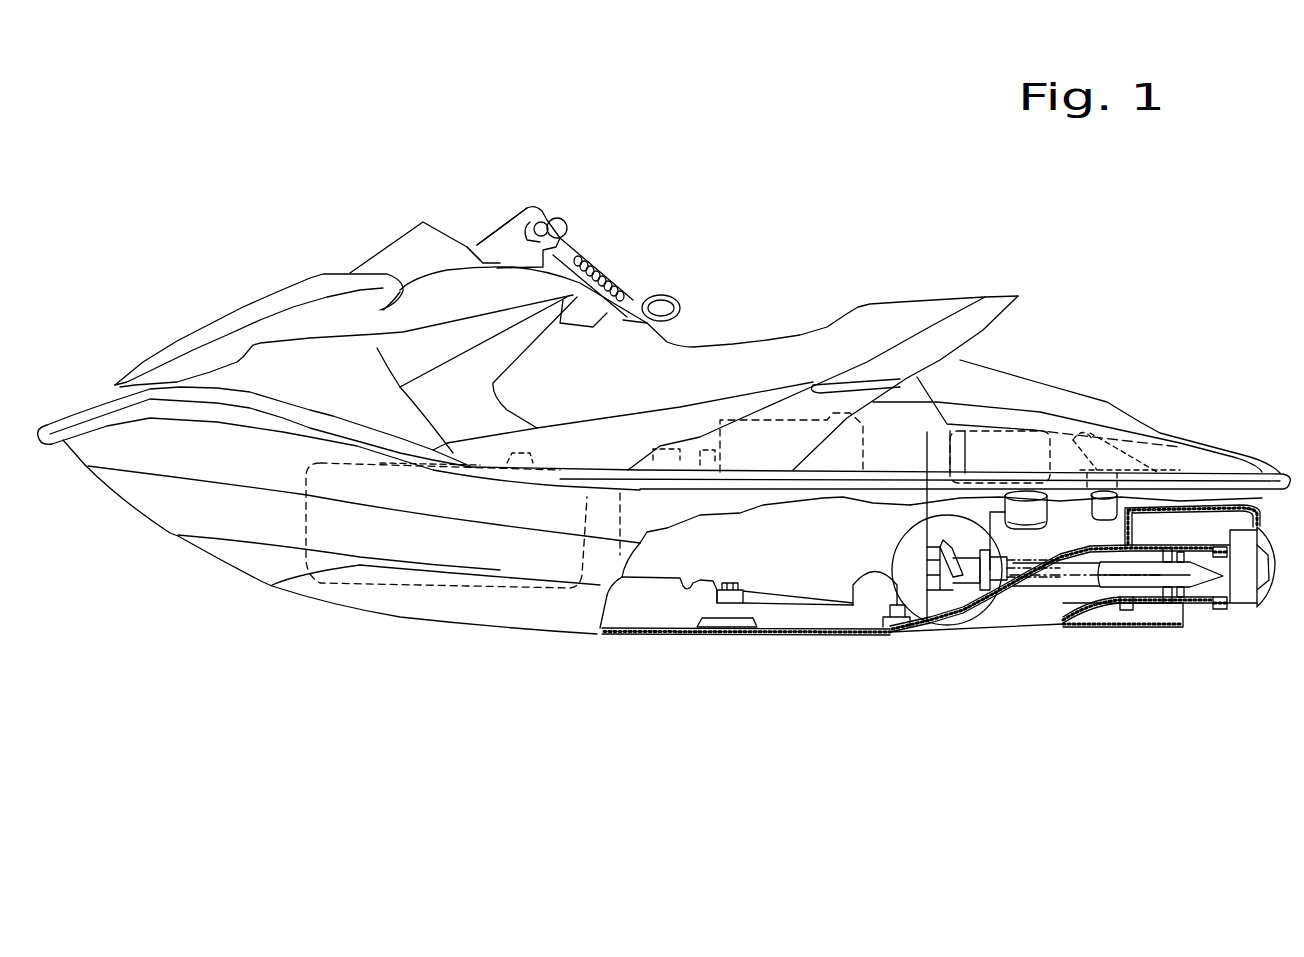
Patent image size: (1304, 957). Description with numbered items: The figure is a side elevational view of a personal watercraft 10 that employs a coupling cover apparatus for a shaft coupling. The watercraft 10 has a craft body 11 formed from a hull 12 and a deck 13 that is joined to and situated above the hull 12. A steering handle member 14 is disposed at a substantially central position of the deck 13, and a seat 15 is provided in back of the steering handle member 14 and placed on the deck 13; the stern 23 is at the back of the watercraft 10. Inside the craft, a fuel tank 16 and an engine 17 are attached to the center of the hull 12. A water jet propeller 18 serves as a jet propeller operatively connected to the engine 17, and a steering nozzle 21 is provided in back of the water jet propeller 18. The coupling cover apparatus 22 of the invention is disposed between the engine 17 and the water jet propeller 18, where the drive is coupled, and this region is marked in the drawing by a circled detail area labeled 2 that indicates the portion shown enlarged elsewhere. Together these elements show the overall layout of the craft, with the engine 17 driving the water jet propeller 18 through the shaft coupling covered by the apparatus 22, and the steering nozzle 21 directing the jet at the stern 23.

The personal watercraft 10 is at (250, 193).
The craft body 11 is at (108, 242).
The hull 12 is at (172, 444).
The deck 13 is at (236, 307).
The steering handle member 14 is at (541, 190).
The seat 15 is at (781, 328).
The fuel tank 16 is at (430, 595).
The engine 17 is at (790, 605).
The FIG. 2 detail region 2 is at (890, 568).
The coupling cover apparatus 22 is at (957, 600).
The water jet propeller 18 is at (1133, 640).
The steering nozzle 21 is at (1217, 628).
The stern 23 is at (1220, 420).